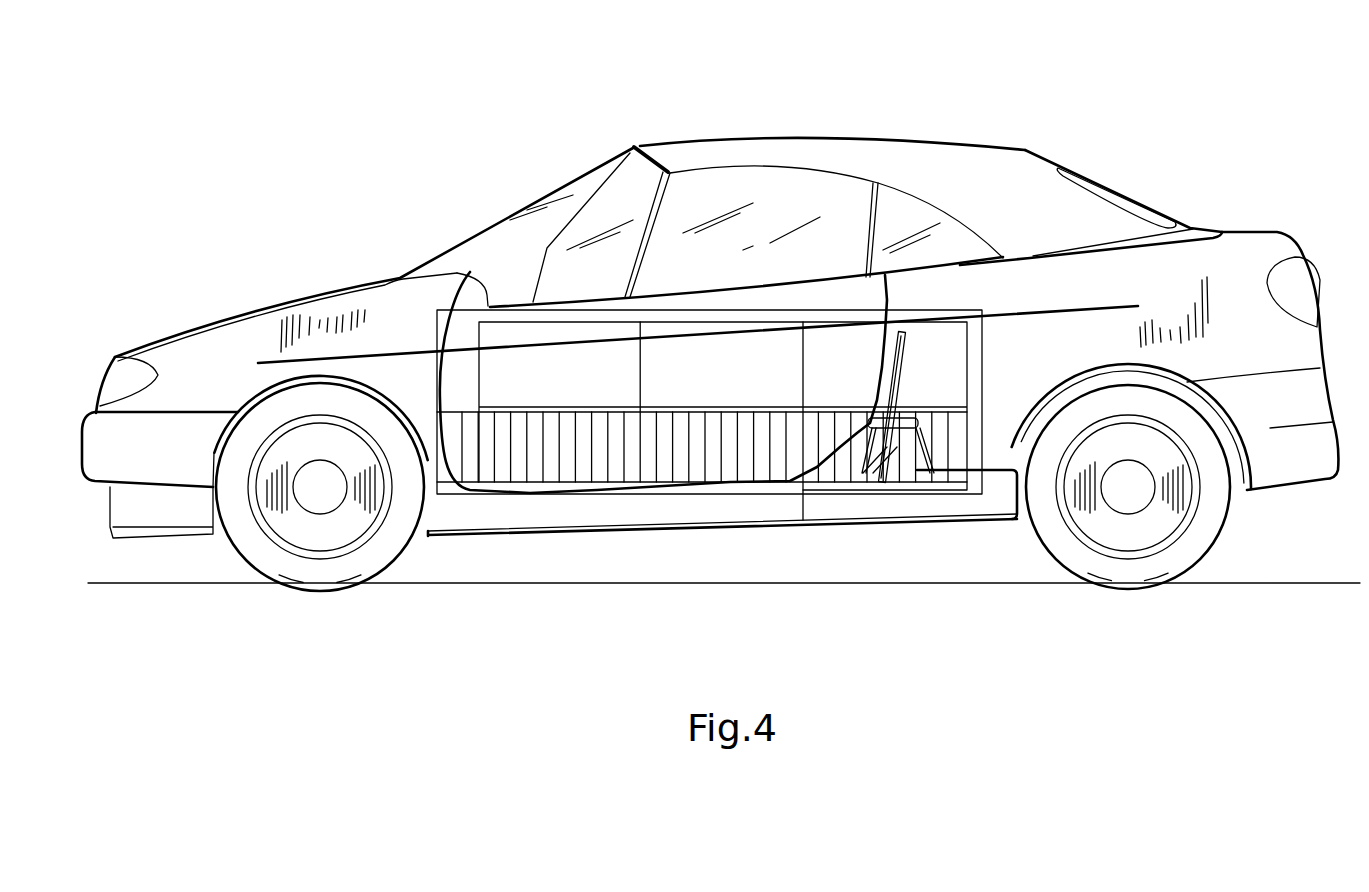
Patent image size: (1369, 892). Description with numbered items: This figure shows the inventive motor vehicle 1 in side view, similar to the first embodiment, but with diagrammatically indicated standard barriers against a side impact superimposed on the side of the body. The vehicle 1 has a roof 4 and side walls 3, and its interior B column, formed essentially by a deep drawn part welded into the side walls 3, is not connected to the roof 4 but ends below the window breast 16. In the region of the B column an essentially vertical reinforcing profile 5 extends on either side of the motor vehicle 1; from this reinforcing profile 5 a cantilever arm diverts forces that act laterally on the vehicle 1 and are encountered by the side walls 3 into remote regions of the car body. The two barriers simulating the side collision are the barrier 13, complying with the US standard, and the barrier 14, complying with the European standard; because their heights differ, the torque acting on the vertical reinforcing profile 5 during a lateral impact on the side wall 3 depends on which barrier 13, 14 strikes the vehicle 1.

The motor vehicle 1 is at (710, 368).
The side wall 3 is at (1030, 370).
The roof 4 is at (891, 165).
The reinforcing profile 5 is at (903, 367).
The barrier 13 is at (477, 310).
The barrier 14 is at (480, 380).
The window breast 16 is at (963, 262).